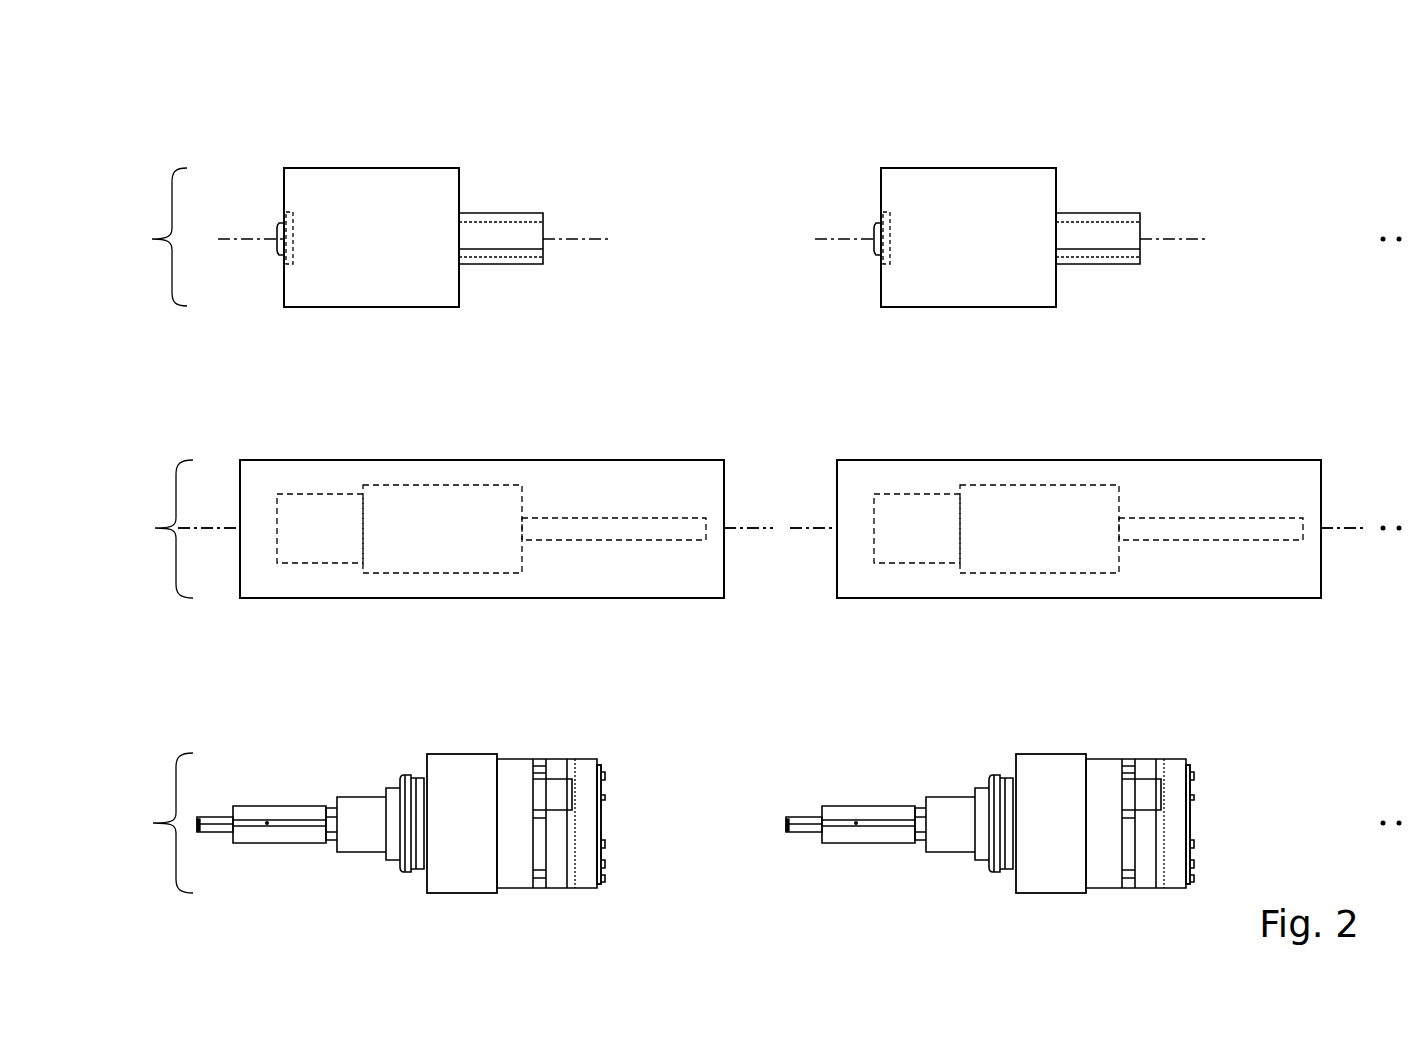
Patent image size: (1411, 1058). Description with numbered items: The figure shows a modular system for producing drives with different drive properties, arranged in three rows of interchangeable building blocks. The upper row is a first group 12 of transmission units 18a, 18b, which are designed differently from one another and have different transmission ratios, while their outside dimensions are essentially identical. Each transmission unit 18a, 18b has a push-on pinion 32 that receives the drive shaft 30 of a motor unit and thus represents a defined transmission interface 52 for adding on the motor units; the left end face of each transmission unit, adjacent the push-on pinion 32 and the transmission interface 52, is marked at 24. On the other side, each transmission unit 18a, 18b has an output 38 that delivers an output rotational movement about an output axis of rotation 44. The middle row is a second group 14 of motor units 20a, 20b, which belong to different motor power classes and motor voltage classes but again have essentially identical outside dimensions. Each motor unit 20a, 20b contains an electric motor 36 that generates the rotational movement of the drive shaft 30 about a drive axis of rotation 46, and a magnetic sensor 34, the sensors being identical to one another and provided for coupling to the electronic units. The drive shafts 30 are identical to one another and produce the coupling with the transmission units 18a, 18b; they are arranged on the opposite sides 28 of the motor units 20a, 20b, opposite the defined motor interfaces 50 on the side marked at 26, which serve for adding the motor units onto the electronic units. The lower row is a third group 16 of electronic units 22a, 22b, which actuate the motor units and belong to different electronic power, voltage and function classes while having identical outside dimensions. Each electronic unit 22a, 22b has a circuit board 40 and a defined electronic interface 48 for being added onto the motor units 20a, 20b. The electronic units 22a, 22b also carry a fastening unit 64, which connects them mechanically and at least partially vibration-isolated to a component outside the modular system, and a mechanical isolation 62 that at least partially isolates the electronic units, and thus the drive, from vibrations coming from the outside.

The first group 12 is at (148, 237).
The second group 14 is at (153, 529).
The third group 16 is at (153, 823).
The transmission unit 18a is at (552, 147).
The transmission unit 18b is at (1149, 147).
The motor unit 20a is at (666, 442).
The motor unit 20b is at (1261, 442).
The electronic unit 22a is at (580, 746).
The electronic unit 22b is at (1174, 746).
The drive module input side 24 is at (271, 214).
The transmission module input side 26 is at (226, 521).
The opposite side 28 is at (732, 502).
The drive shaft 30 is at (591, 528).
The push-on pinion 32 is at (292, 212).
The magnetic sensor 34 is at (315, 528).
The electric motor 36 is at (438, 528).
The output 38 is at (507, 233).
The circuit board 40 is at (603, 812).
The output axis of rotation 44 is at (593, 240).
The drive axis of rotation 46 is at (755, 528).
The electronic interface 48 is at (608, 820).
The motor interface 50 is at (226, 539).
The transmission interface 52 is at (276, 259).
The mechanical isolation 62 is at (458, 787).
The fastening unit 64 is at (285, 793).